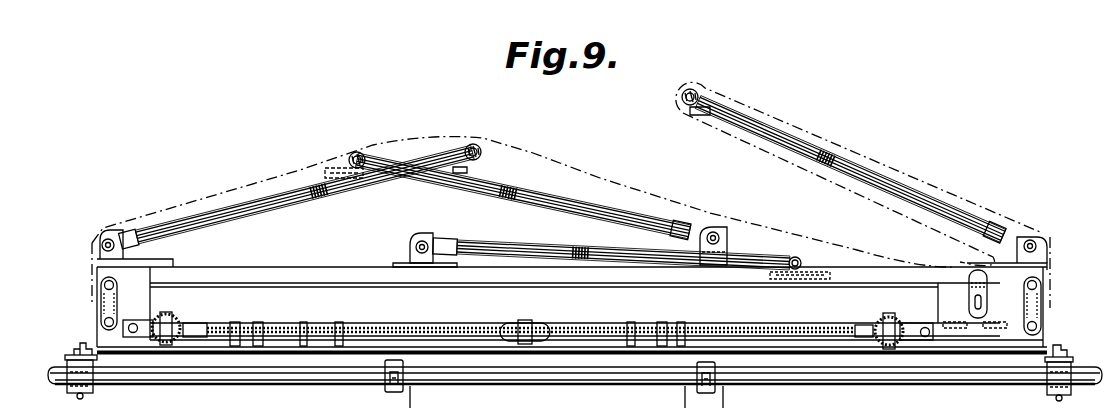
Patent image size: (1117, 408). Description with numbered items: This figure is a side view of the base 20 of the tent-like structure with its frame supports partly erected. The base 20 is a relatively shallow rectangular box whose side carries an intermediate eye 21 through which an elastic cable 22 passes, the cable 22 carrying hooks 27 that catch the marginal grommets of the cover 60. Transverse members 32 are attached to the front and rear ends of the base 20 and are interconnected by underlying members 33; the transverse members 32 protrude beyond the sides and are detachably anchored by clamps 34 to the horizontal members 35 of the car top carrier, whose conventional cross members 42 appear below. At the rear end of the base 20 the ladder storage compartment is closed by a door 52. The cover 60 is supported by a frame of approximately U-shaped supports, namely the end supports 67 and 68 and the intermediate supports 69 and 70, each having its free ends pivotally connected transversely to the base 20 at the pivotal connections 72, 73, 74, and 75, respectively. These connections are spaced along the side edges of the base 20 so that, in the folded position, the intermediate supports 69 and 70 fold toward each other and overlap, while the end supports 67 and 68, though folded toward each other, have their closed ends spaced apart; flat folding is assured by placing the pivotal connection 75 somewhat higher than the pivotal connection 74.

The base 20 is at (296, 302).
The intermediate eye 21 is at (526, 325).
The elastic cable 22 is at (433, 330).
The hooks 27 is at (259, 322).
The transverse members 32 is at (92, 347).
The underlying members 33 is at (797, 345).
The clamps 34 is at (88, 384).
The horizontal members 35 is at (604, 375).
The cross members 42 is at (376, 402).
The door 52 is at (938, 308).
The cover 60 is at (256, 181).
The end support 67 is at (272, 203).
The end support 68 is at (866, 168).
The intermediate support 69 is at (522, 250).
The intermediate support 70 is at (563, 198).
The pivotal connection 72 is at (105, 240).
The pivotal connection 73 is at (1031, 240).
The pivotal connection 74 is at (415, 246).
The pivotal connection 75 is at (716, 236).